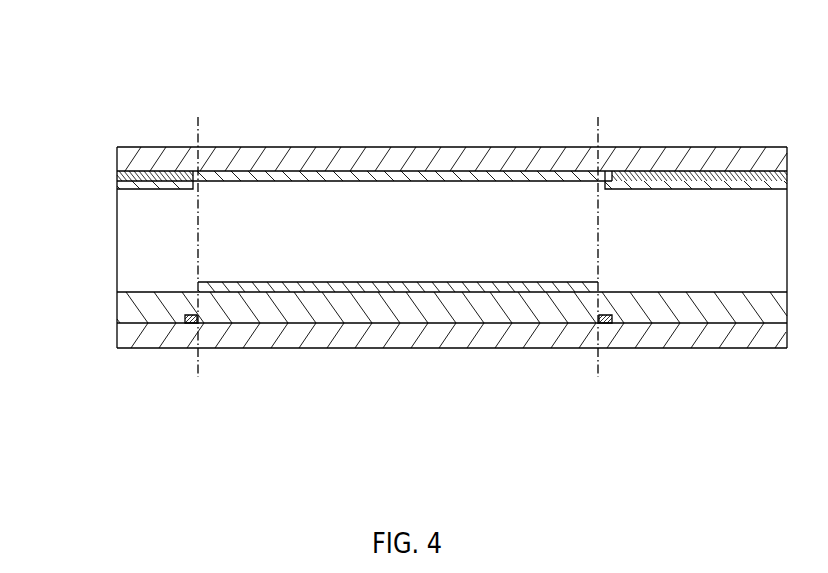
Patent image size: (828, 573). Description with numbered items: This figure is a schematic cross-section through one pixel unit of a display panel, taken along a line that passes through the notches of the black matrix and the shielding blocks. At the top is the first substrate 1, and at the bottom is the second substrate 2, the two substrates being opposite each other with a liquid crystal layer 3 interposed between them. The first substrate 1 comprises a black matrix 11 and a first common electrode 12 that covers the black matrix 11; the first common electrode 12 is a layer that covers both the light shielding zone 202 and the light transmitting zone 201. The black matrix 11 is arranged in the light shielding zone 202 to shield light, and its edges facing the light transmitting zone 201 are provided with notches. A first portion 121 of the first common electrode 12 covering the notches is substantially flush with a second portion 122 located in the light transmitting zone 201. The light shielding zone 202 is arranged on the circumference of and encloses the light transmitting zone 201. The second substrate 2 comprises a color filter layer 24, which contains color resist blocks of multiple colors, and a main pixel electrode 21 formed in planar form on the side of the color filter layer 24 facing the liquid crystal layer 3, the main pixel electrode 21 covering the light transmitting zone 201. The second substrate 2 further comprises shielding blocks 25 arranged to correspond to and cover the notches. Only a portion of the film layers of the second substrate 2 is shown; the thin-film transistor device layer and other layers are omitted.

The first substrate 1 is at (106, 163).
The black matrix 11 is at (713, 160).
The first common electrode 12 is at (652, 186).
The first portion of the first common electrode 121 is at (193, 172).
The second portion of the first common electrode 122 is at (448, 172).
The second substrate 2 is at (110, 317).
The main pixel electrode 21 is at (370, 285).
The color filter layer 24 is at (700, 318).
The shielding block 25 is at (190, 325).
The liquid crystal layer 3 is at (140, 242).
The light transmitting zone 201 is at (383, 133).
The light shielding zone 202 is at (157, 133).